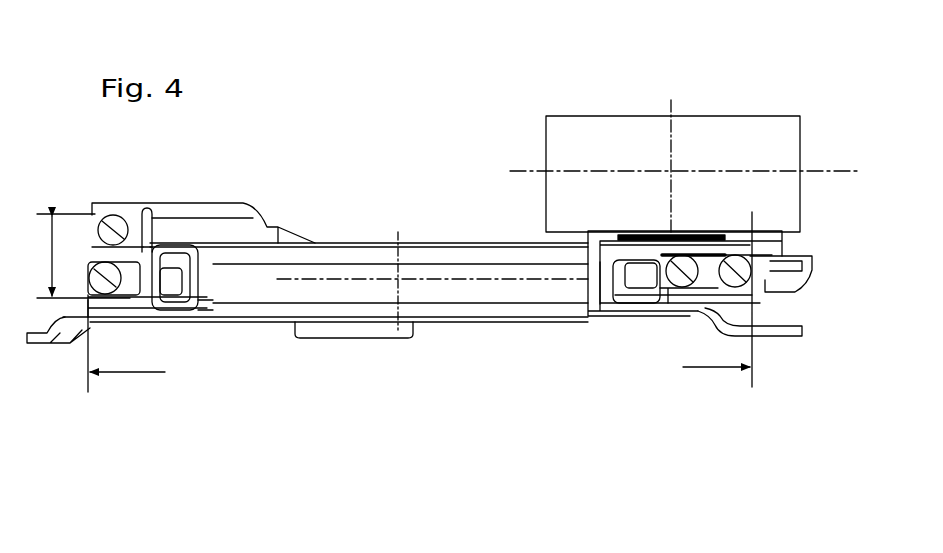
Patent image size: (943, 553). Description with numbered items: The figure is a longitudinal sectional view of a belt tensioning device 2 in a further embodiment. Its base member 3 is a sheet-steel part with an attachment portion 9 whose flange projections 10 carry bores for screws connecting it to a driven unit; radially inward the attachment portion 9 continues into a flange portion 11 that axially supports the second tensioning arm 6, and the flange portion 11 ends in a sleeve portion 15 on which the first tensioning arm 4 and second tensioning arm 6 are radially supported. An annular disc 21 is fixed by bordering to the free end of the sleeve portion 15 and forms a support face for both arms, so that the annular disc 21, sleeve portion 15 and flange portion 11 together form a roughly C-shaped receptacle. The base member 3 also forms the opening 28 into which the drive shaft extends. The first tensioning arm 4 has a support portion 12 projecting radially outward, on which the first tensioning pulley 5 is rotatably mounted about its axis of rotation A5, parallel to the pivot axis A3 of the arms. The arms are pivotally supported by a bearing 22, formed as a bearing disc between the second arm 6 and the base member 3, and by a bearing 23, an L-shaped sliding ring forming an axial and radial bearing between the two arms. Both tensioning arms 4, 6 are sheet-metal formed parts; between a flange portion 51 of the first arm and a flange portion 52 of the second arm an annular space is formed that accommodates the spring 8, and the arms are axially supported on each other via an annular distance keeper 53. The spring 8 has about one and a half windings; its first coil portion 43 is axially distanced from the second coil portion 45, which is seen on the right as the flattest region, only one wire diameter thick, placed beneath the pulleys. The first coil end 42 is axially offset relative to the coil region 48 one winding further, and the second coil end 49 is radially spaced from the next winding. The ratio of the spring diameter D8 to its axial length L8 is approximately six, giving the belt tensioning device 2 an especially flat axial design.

The belt tensioning device 2 is at (300, 100).
The base member 3 is at (581, 326).
The first tensioning arm 4 is at (119, 203).
The first tensioning pulley 5 is at (752, 128).
The second tensioning arm 6 is at (810, 288).
The spring 8 is at (92, 220).
The attachment portion 9 is at (133, 318).
The flange projections 10 is at (791, 337).
The flange portion 11 is at (627, 296).
The support portion 12 is at (708, 236).
The sleeve portion 15 is at (585, 287).
The annular disc 21 is at (606, 233).
The bearing 22 is at (187, 310).
The bearing 23 is at (197, 273).
The opening 28 is at (272, 332).
The first coil end 42 is at (736, 267).
The first coil portion 43 is at (135, 215).
The second coil portion 45 is at (668, 258).
The coil region 48 is at (684, 266).
The second coil end 49 is at (100, 282).
The flange portion 51 is at (113, 226).
The flange portion 52 is at (672, 290).
The annular distance keeper 53 is at (160, 276).
The axial length L8 is at (71, 256).
The diameter D8 is at (144, 346).
The pivot axis A3 is at (400, 313).
The axis of rotation A5 is at (672, 143).